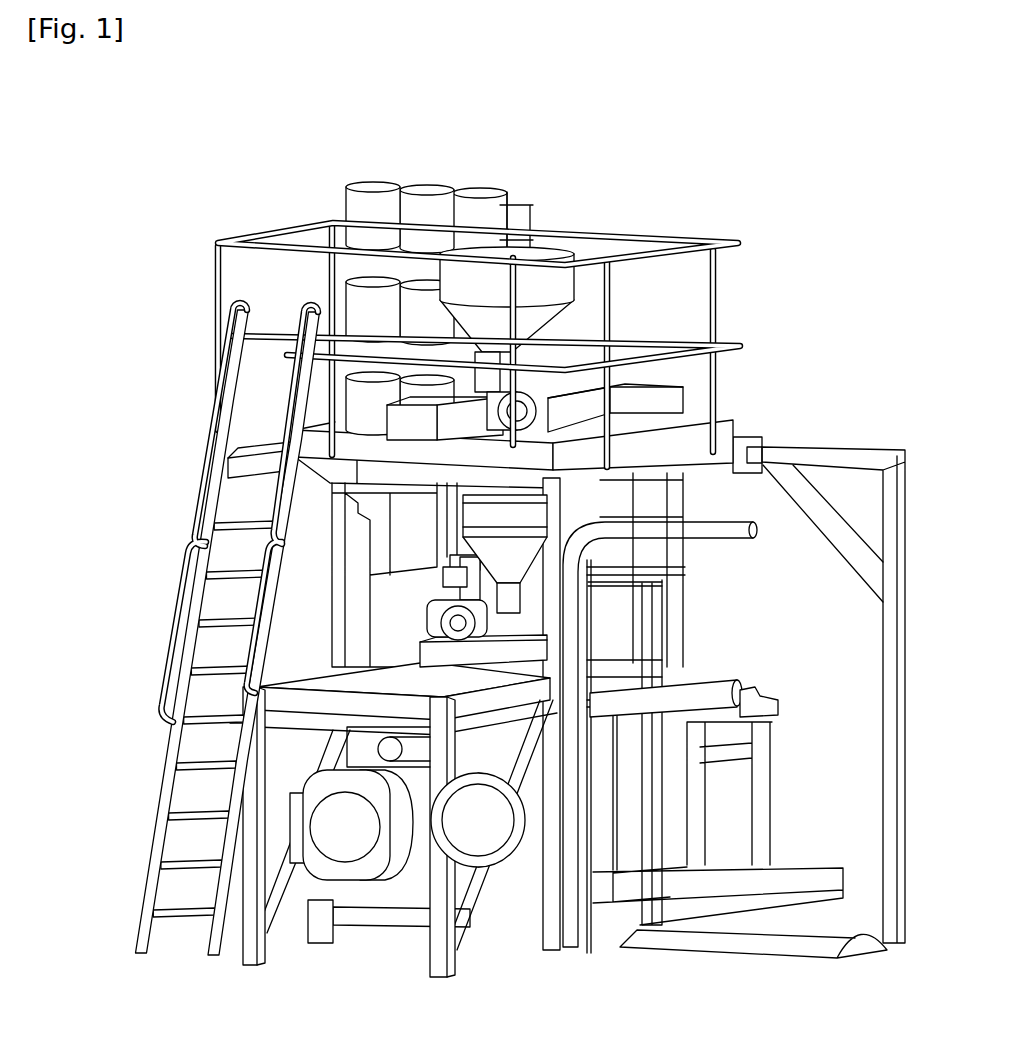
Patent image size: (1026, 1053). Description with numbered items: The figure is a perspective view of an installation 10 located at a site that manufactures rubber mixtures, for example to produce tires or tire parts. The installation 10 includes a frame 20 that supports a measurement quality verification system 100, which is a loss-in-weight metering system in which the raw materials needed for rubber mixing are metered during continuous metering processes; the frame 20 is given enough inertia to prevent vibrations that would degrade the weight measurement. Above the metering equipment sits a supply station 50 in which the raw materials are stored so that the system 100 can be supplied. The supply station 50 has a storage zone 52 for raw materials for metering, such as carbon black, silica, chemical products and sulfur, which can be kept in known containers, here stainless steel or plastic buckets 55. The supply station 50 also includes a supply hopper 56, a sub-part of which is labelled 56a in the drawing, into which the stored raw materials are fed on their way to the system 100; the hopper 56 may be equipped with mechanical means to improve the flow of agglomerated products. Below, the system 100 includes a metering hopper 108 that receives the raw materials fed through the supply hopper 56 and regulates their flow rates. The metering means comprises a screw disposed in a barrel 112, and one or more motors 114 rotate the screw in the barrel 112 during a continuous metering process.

The installation 10 is at (747, 177).
The frame 20 is at (787, 437).
The supply station 50 is at (485, 168).
The storage zone 52 is at (283, 288).
The buckets 55 is at (480, 192).
The supply hopper 56 is at (543, 290).
The hopper discharge cone 56a is at (540, 335).
The measurement quality verification system 100 is at (695, 600).
The metering hopper 108 is at (525, 520).
The barrel 112 is at (685, 705).
The motors 114 is at (345, 850).